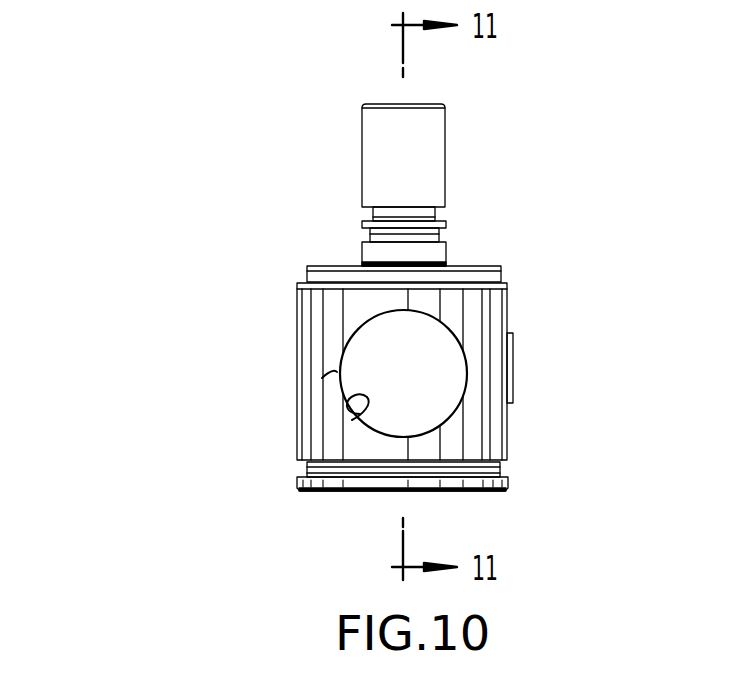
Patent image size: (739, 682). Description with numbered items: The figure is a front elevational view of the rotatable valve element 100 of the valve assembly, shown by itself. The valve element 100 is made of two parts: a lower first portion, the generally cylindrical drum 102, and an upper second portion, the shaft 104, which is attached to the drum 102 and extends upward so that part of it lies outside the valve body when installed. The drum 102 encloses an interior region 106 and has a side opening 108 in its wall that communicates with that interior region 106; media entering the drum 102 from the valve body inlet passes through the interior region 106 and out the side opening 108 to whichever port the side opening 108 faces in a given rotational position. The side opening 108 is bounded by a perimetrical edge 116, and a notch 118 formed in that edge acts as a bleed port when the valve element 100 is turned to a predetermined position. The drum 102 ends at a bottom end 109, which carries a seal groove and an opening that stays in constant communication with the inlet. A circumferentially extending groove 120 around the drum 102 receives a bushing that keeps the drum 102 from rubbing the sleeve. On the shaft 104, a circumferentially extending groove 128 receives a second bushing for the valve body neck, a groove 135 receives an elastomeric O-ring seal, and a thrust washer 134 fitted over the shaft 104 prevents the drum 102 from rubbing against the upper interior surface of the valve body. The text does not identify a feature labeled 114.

The rotatable valve element 100 is at (165, 214).
The drum 102 is at (513, 388).
The shaft 104 is at (447, 172).
The interior region 106 is at (367, 352).
The side opening 108 is at (427, 358).
The bottom end 109 is at (492, 491).
The side button 114 is at (513, 352).
The perimetrical edge 116 is at (352, 420).
The notch 118 is at (322, 378).
The circumferentially extending groove 120 is at (307, 468).
The circumferentially extending groove 128 is at (440, 213).
The thrust washer 134 is at (447, 266).
The groove 135 is at (368, 235).